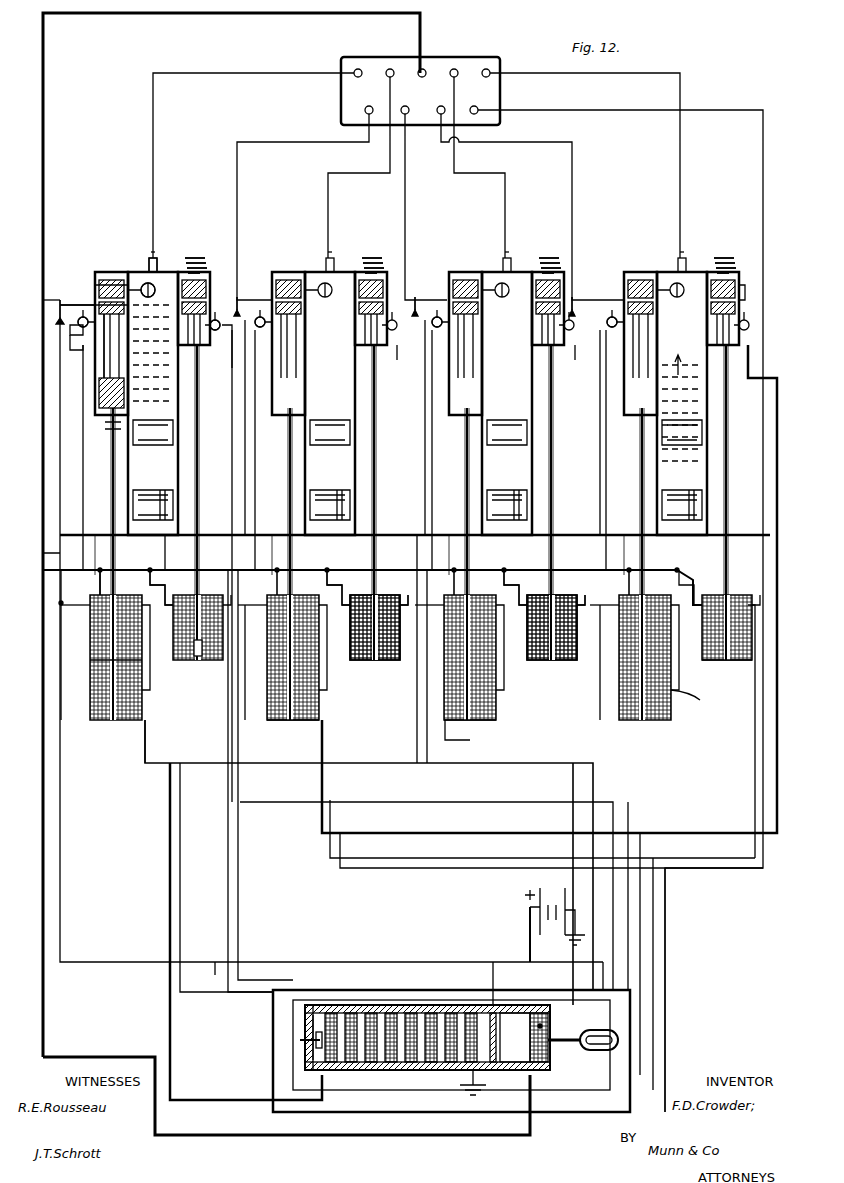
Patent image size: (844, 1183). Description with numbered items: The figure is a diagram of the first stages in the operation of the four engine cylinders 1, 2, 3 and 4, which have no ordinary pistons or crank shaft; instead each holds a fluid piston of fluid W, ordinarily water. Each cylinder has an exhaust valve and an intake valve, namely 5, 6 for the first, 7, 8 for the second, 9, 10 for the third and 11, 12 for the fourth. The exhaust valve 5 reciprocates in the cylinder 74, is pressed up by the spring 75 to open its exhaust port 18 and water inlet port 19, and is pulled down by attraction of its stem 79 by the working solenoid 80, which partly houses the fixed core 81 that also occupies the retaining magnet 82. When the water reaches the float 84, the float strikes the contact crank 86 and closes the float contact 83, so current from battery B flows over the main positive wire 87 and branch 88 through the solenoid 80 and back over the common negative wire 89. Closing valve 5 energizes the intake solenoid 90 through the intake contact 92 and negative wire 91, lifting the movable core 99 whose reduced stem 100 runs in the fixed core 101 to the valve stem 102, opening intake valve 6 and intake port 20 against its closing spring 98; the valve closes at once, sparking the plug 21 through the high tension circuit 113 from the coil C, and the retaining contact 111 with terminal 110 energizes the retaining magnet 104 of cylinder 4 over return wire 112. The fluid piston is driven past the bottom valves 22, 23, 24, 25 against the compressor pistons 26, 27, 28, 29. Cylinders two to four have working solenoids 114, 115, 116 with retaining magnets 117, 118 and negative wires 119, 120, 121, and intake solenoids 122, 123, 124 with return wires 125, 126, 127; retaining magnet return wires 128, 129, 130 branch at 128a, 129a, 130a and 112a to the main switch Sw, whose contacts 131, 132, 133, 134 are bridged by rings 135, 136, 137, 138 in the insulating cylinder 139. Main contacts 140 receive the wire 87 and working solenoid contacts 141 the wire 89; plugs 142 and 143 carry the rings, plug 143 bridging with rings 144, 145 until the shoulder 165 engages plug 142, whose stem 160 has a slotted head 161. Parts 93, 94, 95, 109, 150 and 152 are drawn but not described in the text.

The engine cylinder 1 is at (139, 272).
The engine cylinder 2 is at (314, 272).
The engine cylinder 3 is at (494, 272).
The engine cylinder 4 is at (667, 272).
The exhaust valve 5 is at (96, 276).
The intake valve 6 is at (211, 276).
The exhaust valve 7 is at (274, 276).
The intake valve 8 is at (388, 276).
The exhaust valve 9 is at (455, 275).
The intake valve 10 is at (565, 278).
The exhaust valve 11 is at (632, 276).
The intake valve 12 is at (739, 278).
The exhaust port 18 is at (95, 292).
The inlet port 19 is at (99, 398).
The intake port 20 is at (745, 285).
The spark plug 21 is at (152, 258).
The bottom valve 22 is at (173, 427).
The bottom valve 23 is at (350, 427).
The bottom valve 24 is at (527, 427).
The bottom valve 25 is at (702, 427).
The compressor piston 26 is at (173, 498).
The compressor piston 27 is at (350, 498).
The compressor piston 28 is at (527, 498).
The compressor piston 29 is at (702, 498).
The cylinder 74 is at (84, 353).
The spring 75 is at (105, 430).
The stem 79 is at (100, 578).
The working solenoid 80 is at (90, 625).
The fixed core 81 is at (110, 650).
The retaining magnet 82 is at (90, 698).
The float contact 83 is at (58, 304).
The float 84 is at (140, 285).
The contact crank 86 is at (58, 300).
The main positive wire 87 is at (45, 126).
The branch 88 is at (142, 578).
The common negative wire 89 is at (215, 962).
The intake solenoid 90 is at (194, 655).
The negative wire 91 is at (232, 552).
The intake contact 92 is at (76, 323).
The valve body 93 is at (70, 333).
The valve connection 94 is at (75, 348).
The passage 95 is at (95, 308).
The closing spring 98 is at (462, 254).
The movable core 99 is at (173, 637).
The reduced stem 100 is at (426, 606).
The fixed core 101 is at (173, 620).
The stem 102 is at (164, 552).
The retaining magnet 104 is at (671, 704).
The exhaust valve 109 is at (222, 322).
The terminal 110 is at (226, 370).
The spark and retaining contact 111 is at (512, 355).
The negative return wire 112 is at (240, 406).
The branch 112a is at (630, 814).
The high tension circuit 113 is at (260, 72).
The working solenoid 114 is at (282, 657).
The working solenoid 115 is at (444, 650).
The working solenoid 116 is at (700, 694).
The retaining magnet 117 is at (267, 720).
The retaining magnet 118 is at (496, 712).
The negative wire 119 is at (267, 450).
The negative wire 120 is at (440, 450).
The negative wire 121 is at (617, 450).
The intake solenoid 122 is at (352, 660).
The intake solenoid 123 is at (527, 660).
The intake solenoid 124 is at (710, 660).
The negative return wire 125 is at (245, 477).
The negative return wire 126 is at (425, 479).
The negative return wire 127 is at (600, 493).
The return wire 128 is at (417, 692).
The branch 128a is at (445, 740).
The return wire 129 is at (145, 740).
The branch 129a is at (178, 794).
The return wire 130 is at (324, 729).
The branch 130a is at (340, 844).
The contact 131 is at (390, 1005).
The contact 132 is at (415, 1005).
The contact 133 is at (440, 1005).
The contact 134 is at (465, 1005).
The bridge ring 135 is at (385, 1070).
The bridge ring 136 is at (410, 1070).
The bridge ring 137 is at (432, 1070).
The bridge ring 138 is at (456, 1070).
The insulating cylinder 139 is at (305, 1012).
The main contacts 140 is at (550, 1005).
The working solenoid contacts 141 is at (496, 1005).
The insulating plug 142 is at (313, 1020).
The insulating plug 143 is at (545, 1027).
The ring 144 is at (548, 1020).
The ring 145 is at (513, 1012).
The contact rod 150 is at (300, 1040).
The ground connection 152 is at (503, 1075).
The stem 160 is at (562, 1044).
The slot 161 is at (605, 1050).
The shoulder 165 is at (316, 1044).
The battery B is at (566, 913).
The coil C is at (440, 68).
The fluid W is at (166, 290).
The main electric switch Sw is at (492, 934).